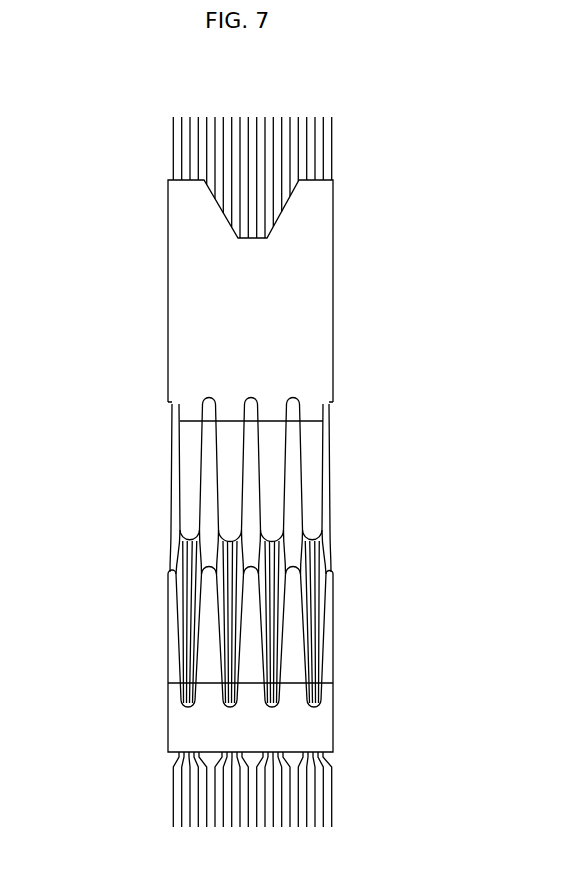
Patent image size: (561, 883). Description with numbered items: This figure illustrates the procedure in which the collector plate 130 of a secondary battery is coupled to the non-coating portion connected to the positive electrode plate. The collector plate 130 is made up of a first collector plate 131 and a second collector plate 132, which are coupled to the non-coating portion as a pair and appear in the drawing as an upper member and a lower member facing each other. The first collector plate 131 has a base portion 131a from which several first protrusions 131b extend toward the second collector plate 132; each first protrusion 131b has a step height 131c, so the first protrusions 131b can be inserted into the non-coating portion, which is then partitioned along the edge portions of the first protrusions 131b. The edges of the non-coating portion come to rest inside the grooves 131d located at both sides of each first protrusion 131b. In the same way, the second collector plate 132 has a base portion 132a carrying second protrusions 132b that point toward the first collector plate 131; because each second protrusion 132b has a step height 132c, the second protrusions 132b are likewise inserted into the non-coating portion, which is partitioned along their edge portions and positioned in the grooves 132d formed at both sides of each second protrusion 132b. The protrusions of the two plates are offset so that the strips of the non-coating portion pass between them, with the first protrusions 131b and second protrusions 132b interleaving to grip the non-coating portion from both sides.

The collector plate 130 is at (83, 200).
The first collector plate 131 is at (362, 201).
The first base portion 131a is at (323, 273).
The first protrusions 131b is at (310, 487).
The step height 131c is at (319, 422).
The grooves 131d is at (306, 396).
The second collector plate 132 is at (358, 778).
The second base portion 132a is at (333, 737).
The second protrusions 132b is at (328, 615).
The step height 132c is at (327, 683).
The grooves 132d is at (320, 708).